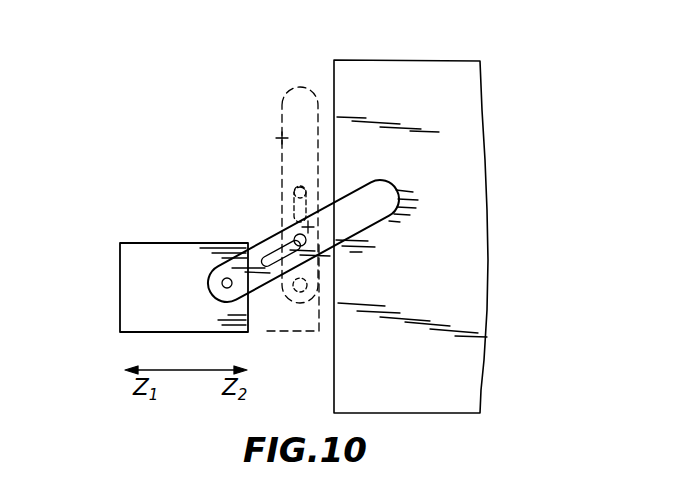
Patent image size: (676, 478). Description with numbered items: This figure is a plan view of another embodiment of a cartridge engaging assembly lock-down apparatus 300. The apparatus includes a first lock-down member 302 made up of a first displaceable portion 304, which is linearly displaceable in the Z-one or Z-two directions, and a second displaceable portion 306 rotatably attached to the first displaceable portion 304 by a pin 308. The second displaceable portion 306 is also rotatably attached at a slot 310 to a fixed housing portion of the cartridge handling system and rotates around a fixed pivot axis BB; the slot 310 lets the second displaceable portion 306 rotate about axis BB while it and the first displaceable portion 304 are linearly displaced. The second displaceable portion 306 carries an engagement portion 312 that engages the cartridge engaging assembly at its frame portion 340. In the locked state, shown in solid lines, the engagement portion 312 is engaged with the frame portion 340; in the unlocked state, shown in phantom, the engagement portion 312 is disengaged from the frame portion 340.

The lock-down apparatus 300 is at (165, 138).
The first lock-down member 302 is at (288, 238).
The first displaceable portion 304 is at (126, 256).
The second displaceable portion 306 is at (282, 138).
The pin 308 is at (222, 287).
The slot 310 is at (292, 188).
The engagement portion 312 is at (298, 84).
The frame portion 340 is at (456, 66).